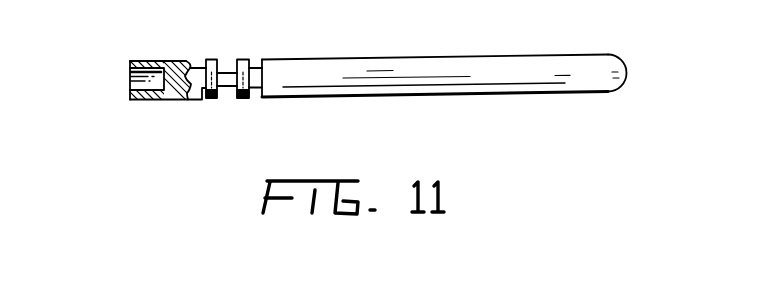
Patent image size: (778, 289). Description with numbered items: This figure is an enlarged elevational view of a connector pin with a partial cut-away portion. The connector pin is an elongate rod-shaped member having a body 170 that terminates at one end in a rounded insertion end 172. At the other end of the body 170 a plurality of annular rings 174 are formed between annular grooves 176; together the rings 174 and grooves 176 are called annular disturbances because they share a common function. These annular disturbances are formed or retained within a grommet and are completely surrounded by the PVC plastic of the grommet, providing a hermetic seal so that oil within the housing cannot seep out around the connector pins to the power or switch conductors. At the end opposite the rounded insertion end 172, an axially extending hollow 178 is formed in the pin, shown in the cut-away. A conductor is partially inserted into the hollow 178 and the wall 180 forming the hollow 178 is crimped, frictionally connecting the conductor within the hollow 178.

The body 170 is at (402, 70).
The rounded insertion end 172 is at (622, 70).
The annular rings 174 is at (242, 60).
The annular grooves 176 is at (253, 88).
The axially extending hollow 178 is at (145, 83).
The wall 180 is at (147, 67).